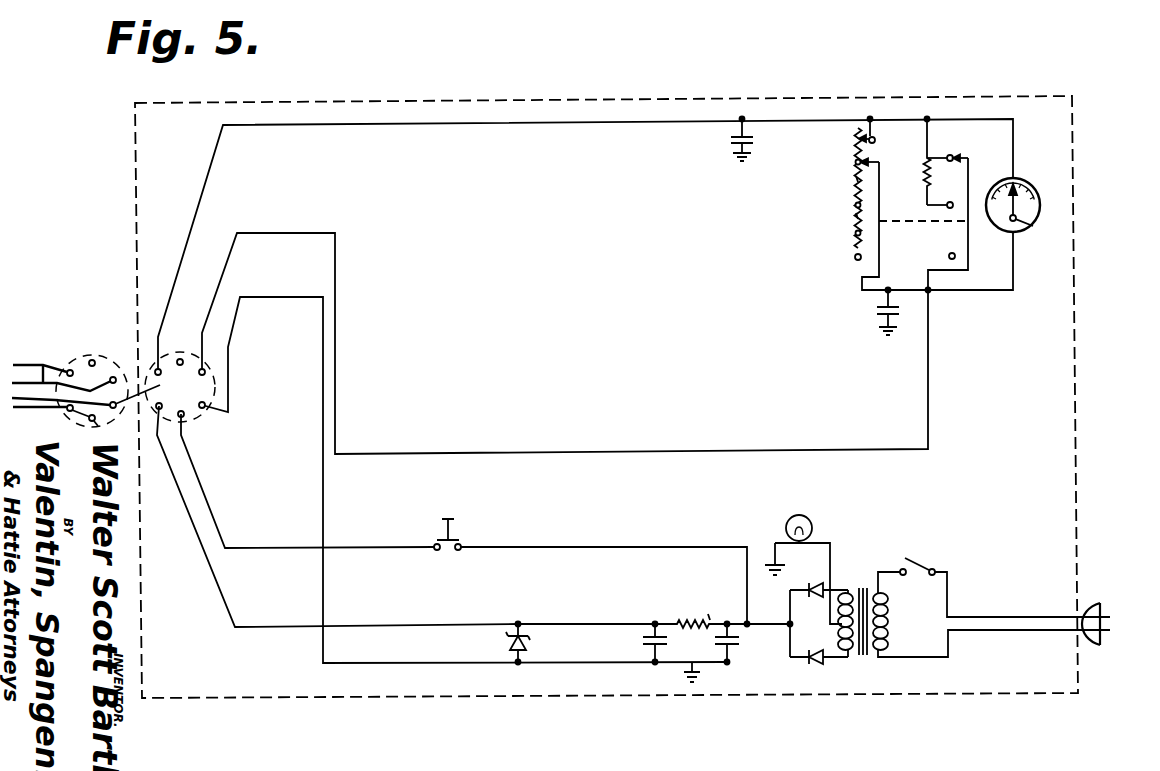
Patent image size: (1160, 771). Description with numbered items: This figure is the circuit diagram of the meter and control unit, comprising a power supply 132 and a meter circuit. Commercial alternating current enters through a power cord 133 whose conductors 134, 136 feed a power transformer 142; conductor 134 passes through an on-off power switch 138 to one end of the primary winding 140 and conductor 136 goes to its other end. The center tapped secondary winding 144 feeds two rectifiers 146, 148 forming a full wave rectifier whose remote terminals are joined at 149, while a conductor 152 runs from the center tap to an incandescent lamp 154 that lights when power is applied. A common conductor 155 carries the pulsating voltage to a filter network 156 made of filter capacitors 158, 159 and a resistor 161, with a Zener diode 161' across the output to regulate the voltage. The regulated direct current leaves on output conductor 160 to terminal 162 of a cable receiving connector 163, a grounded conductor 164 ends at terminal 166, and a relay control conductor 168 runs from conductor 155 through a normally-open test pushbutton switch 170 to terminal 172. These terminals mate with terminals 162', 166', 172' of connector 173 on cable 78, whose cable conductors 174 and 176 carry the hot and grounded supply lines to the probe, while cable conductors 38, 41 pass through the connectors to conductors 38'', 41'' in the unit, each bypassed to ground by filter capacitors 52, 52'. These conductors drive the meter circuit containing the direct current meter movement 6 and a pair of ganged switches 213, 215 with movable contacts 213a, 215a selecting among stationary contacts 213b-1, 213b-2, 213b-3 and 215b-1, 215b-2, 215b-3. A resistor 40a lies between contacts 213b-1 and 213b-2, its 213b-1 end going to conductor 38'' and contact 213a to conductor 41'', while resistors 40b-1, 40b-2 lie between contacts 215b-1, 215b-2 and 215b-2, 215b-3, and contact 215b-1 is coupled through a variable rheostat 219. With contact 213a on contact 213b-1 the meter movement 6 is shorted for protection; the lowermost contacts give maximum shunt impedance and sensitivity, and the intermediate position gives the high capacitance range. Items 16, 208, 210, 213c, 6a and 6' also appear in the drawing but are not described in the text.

The conductor 38'' is at (585, 245).
The conductor 41'' is at (565, 343).
The grounded conductor 164 is at (484, 652).
The housing 16 is at (596, 227).
The filter capacitor 52 is at (718, 139).
The ganged switch 215 is at (836, 244).
The variable rheostat 219 is at (850, 140).
The stationary contact 215b-1 is at (864, 162).
The resistor 40b-1 is at (856, 179).
The stationary contact 215b-2 is at (856, 204).
The resistor 40b-2 is at (856, 216).
The stationary contact 215b-3 is at (855, 235).
The resistor 40a is at (919, 178).
The movable contact 215a is at (881, 221).
The stationary contact 213b-1 is at (962, 145).
The movable contact 213a is at (968, 181).
The ganged switch 213 is at (972, 233).
The stationary contact 213b-2 is at (953, 185).
The stationary contact 213b-3 is at (903, 222).
The filter capacitor 52' is at (856, 313).
The direct current meter movement 6 is at (1020, 193).
The meter scale 6a is at (1038, 192).
The meter pointer 6' is at (1034, 212).
The lead 213c is at (1012, 177).
The cable connector terminal 166' is at (164, 387).
The connector pin 208 is at (156, 366).
The cable receiving connector 163 is at (179, 350).
The connector pin 210 is at (206, 371).
The terminal 166 is at (246, 387).
The terminal 172 is at (231, 427).
The terminal 162 is at (331, 515).
The cable conductor 38 is at (74, 371).
The connector 173 is at (105, 343).
The cable conductor 41 is at (43, 363).
The cable conductor 176 is at (11, 365).
The cable conductor 174 is at (33, 416).
The cable 78 is at (36, 426).
The cable connector terminal 162' is at (67, 422).
The cable connector terminal 172' is at (115, 434).
The test pushbutton switch 170 is at (462, 543).
The relay control conductor 168 is at (600, 546).
The power supply 132 is at (757, 553).
The Zener diode 161' is at (492, 628).
The output conductor 160 is at (542, 622).
The filter capacitor 158 is at (645, 642).
The filter network 156 is at (683, 611).
The resistor 161 is at (709, 602).
The common conductor 155 is at (737, 640).
The filter capacitor 159 is at (734, 651).
The rectifier common connection 149 is at (750, 623).
The incandescent lamp 154 is at (803, 514).
The conductor 152 is at (815, 534).
The rectifier 146 is at (819, 620).
The rectifier 148 is at (822, 663).
The center tapped secondary winding 144 is at (848, 588).
The power transformer 142 is at (878, 580).
The primary winding 140 is at (891, 645).
The on-off power switch 138 is at (924, 564).
The power conductor 134 is at (1002, 617).
The power conductor 136 is at (975, 632).
The power cord 133 is at (1097, 603).